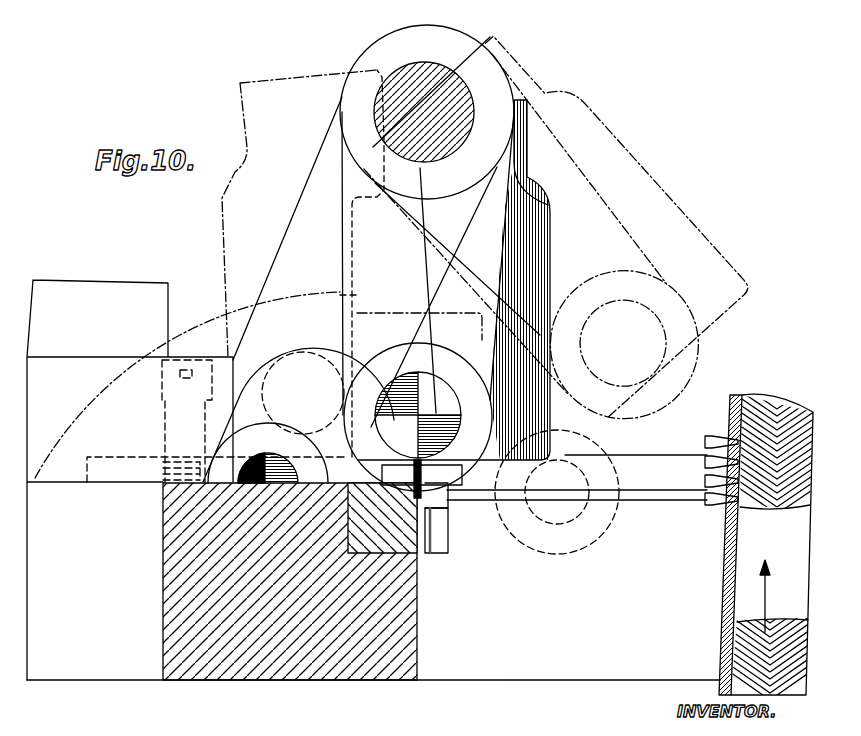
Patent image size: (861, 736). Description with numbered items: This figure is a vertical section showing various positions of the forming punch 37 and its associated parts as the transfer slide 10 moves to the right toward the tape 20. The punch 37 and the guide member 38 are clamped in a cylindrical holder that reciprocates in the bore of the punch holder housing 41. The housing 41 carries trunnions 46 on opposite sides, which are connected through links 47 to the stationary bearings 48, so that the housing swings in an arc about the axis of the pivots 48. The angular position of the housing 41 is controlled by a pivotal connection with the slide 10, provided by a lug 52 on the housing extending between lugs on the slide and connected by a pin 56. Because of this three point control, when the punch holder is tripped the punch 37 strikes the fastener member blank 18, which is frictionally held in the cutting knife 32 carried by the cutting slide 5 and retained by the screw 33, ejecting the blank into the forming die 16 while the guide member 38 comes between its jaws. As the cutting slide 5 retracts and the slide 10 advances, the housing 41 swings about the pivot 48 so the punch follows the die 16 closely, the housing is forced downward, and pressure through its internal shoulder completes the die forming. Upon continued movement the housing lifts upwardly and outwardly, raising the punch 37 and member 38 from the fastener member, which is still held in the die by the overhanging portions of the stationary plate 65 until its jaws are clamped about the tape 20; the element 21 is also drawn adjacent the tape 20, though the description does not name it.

The cutting slide 5 is at (60, 370).
The transfer slide 10 is at (325, 662).
The forming die 16 is at (418, 556).
The fastener member blank 18 is at (702, 464).
The tape 20 is at (778, 410).
The plate 21 is at (720, 613).
The cutting knife 32 is at (99, 488).
The screw 33 is at (177, 390).
The forming punch 37 is at (445, 507).
The guide member 38 is at (457, 490).
The punch holder housing 41 is at (548, 232).
The trunnions 46 is at (408, 385).
The links 47 is at (350, 205).
The stationary bearings 48 is at (398, 72).
The lug 52 is at (307, 342).
The pin 56 is at (276, 456).
The stationary plate 65 is at (652, 467).